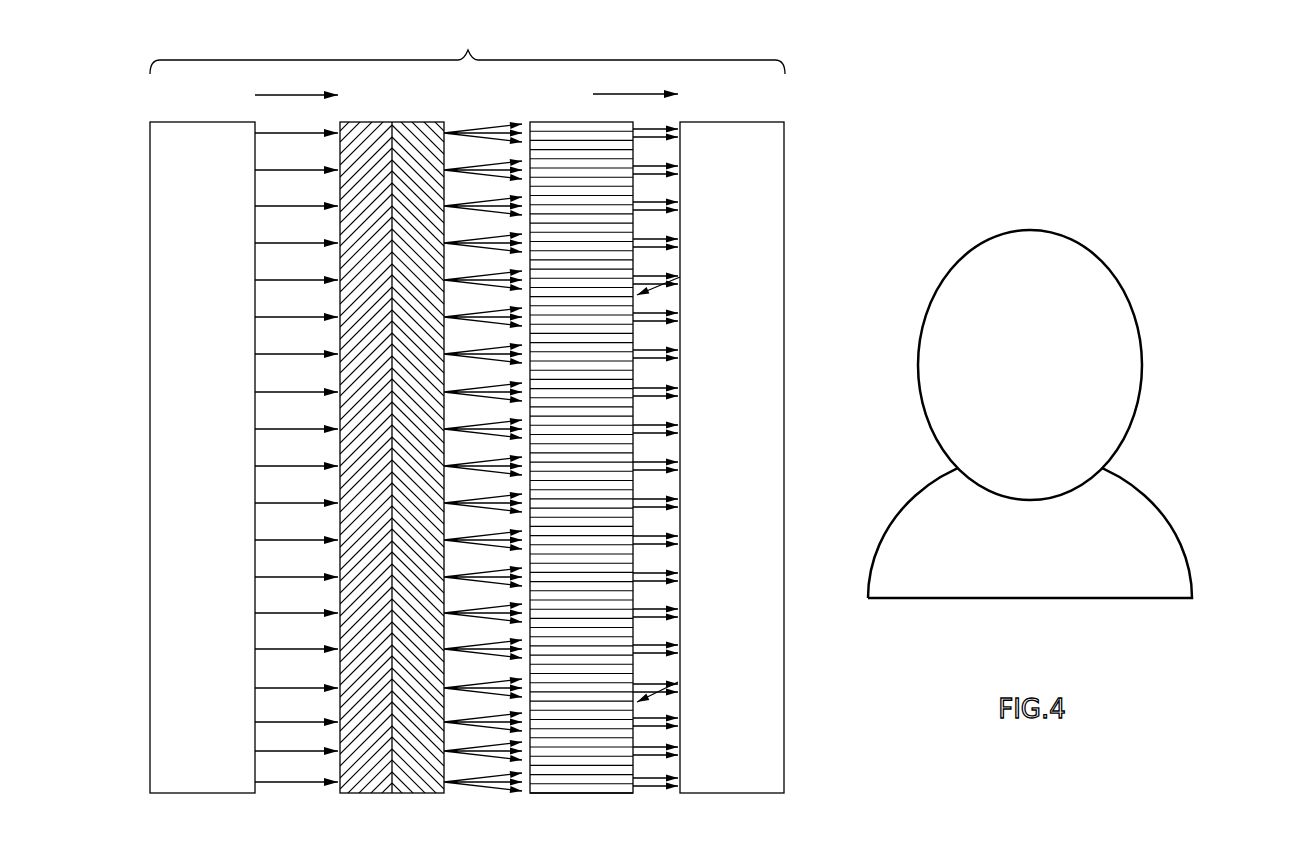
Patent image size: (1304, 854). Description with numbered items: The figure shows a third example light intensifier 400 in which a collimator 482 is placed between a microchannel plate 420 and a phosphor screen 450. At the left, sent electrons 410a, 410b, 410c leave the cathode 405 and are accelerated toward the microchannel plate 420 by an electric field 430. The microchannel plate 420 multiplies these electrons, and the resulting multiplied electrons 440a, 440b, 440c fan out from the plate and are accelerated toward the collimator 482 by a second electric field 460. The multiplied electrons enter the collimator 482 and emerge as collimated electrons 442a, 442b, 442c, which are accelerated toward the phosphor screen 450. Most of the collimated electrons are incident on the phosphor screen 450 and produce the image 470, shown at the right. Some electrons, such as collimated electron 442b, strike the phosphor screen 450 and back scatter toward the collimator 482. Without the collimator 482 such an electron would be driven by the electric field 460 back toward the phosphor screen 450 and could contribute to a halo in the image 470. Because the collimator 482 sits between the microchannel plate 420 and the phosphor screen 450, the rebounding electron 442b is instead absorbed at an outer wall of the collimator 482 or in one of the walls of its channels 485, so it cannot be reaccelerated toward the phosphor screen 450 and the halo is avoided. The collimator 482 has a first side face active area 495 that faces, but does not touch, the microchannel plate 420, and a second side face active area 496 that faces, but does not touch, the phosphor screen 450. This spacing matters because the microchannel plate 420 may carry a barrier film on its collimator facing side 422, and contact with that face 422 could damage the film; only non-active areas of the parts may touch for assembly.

The light intensifier 400 is at (467, 50).
The cathode 405 is at (150, 524).
The sent electron 410a is at (298, 207).
The sent electron 410b is at (280, 281).
The sent electron 410c is at (282, 431).
The microchannel plate 420 is at (393, 794).
The collimator facing side 422 is at (447, 643).
The electric field 430 is at (256, 94).
The multiplied electron 440a is at (488, 200).
The multiplied electron 440b is at (470, 275).
The multiplied electron 440c is at (490, 422).
The collimated electron 442a is at (645, 198).
The collimated electron 442b is at (655, 278).
The collimated electron 442c is at (657, 436).
The phosphor screen 450 is at (786, 705).
The electric field 460 is at (652, 96).
The image 470 is at (1237, 230).
The collimator 482 is at (580, 794).
The channels 485 is at (606, 697).
The first side face active area 495 is at (528, 152).
The second side face active area 496 is at (636, 667).